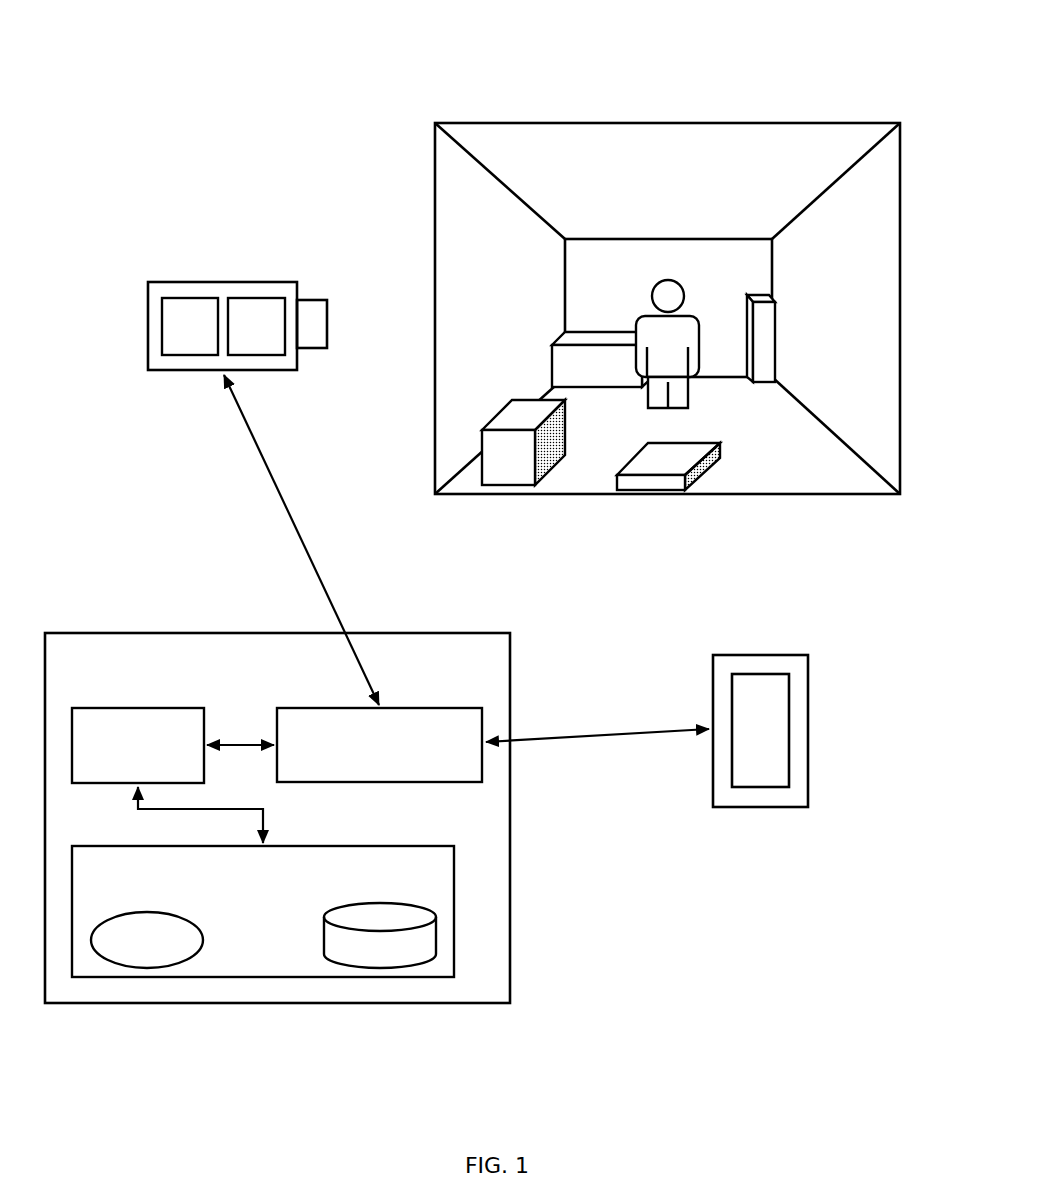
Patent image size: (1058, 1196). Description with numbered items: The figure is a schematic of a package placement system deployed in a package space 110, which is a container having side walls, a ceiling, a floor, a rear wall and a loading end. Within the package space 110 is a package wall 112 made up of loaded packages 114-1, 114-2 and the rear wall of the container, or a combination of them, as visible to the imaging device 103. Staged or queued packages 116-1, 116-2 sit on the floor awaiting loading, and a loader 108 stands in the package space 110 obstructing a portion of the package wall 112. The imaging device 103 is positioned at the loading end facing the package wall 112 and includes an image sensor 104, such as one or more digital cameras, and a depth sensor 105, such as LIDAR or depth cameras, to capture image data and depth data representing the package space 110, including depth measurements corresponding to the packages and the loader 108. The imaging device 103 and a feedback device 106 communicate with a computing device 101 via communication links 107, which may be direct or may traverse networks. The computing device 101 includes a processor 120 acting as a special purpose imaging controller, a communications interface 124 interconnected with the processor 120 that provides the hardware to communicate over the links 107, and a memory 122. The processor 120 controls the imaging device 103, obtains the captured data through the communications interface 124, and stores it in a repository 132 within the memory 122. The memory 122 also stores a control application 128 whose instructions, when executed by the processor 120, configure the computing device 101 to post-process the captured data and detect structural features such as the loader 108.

The package space 110 is at (697, 290).
The package wall 112 is at (623, 232).
The loader 108 is at (701, 269).
The loaded package 114-1 is at (551, 330).
The loaded package 114-2 is at (779, 305).
The staged package 116-1 is at (513, 497).
The staged package 116-2 is at (651, 499).
The imaging device 103 is at (241, 304).
The image sensor 104 is at (190, 326).
The depth sensor 105 is at (256, 326).
The communication link 107 is at (466, 558).
The computing device 101 is at (305, 818).
The processor 120 is at (138, 745).
The communications interface 124 is at (379, 745).
The memory 122 is at (318, 911).
The control application 128 is at (147, 940).
The repository 132 is at (437, 938).
The feedback device 106 is at (805, 660).